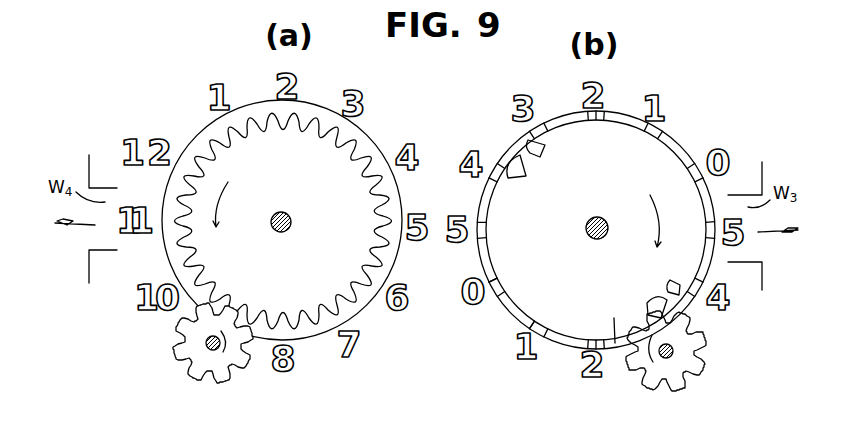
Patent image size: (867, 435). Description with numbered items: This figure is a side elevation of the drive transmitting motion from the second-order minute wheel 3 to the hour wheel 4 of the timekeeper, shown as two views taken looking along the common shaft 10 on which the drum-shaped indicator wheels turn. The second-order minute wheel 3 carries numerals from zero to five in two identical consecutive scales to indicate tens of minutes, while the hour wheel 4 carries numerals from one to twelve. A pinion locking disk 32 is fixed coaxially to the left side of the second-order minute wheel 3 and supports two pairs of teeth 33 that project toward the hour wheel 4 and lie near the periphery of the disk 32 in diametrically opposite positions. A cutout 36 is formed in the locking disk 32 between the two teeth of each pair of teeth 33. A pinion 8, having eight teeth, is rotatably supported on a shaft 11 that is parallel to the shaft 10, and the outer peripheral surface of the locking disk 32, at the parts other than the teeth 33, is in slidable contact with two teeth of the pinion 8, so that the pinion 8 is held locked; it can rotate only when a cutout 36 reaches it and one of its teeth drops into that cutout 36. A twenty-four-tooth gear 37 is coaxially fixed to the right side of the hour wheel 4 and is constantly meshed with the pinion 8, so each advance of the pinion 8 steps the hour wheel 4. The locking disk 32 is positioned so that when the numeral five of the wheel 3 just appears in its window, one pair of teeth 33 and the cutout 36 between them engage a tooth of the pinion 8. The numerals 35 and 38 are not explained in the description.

The second-order minute wheel 3 is at (565, 350).
The hour wheel 4 is at (260, 343).
The pinion 8 is at (173, 350).
The shaft 10 is at (288, 229).
The shaft 11 is at (212, 351).
The pinion locking disk 32 is at (620, 348).
The teeth 33 is at (541, 156).
The graduation 35 is at (538, 347).
The cutout 36 is at (519, 152).
The 24-tooth gear 37 is at (323, 312).
The graduation 38 is at (497, 295).